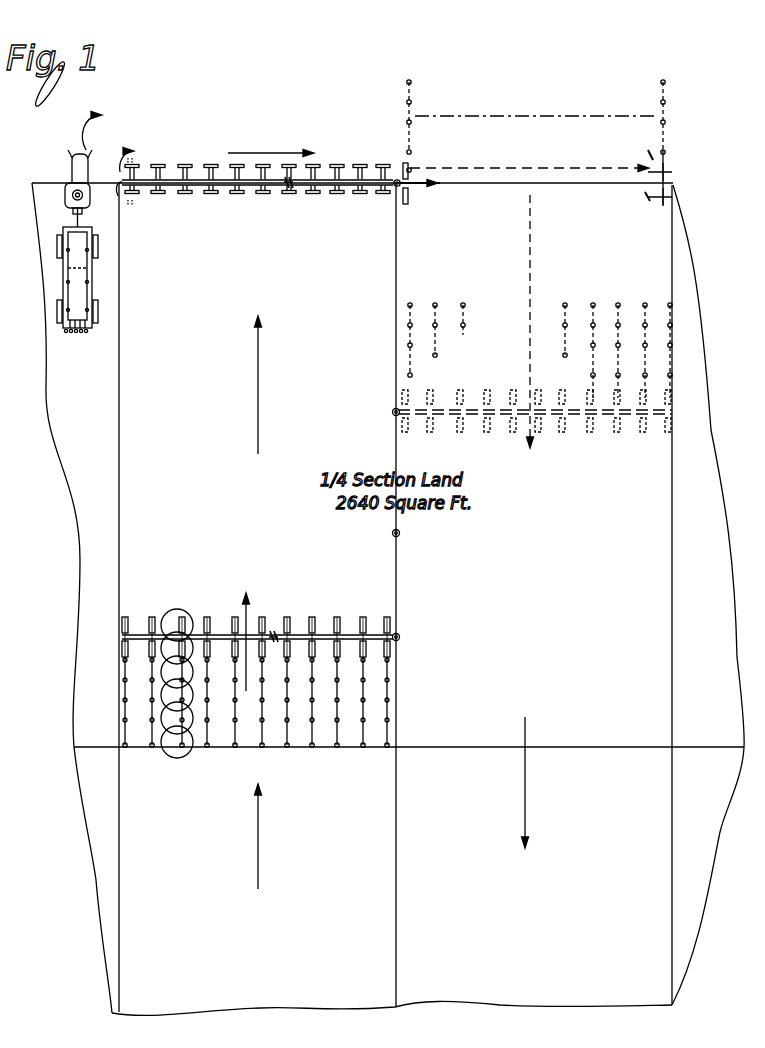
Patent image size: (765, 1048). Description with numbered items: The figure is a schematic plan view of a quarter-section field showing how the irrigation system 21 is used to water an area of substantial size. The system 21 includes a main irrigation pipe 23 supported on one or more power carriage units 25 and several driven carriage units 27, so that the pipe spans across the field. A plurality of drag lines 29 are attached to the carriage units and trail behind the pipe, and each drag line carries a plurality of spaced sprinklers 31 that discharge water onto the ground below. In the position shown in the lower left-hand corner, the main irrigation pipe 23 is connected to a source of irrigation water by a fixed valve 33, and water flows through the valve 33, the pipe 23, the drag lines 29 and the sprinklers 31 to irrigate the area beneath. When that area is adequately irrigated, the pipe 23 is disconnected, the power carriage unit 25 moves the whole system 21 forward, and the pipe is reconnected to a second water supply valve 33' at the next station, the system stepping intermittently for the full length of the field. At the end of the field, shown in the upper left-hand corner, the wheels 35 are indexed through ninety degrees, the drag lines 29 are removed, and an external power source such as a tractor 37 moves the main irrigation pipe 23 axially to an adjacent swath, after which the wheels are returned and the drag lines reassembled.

The irrigation system 21 is at (234, 203).
The main irrigation pipe 23 is at (300, 188).
The power carriage unit 25 is at (208, 617).
The driven carriage units 27 is at (363, 620).
The drag lines 29 is at (345, 745).
The sprinklers 31 is at (195, 745).
The fixed valve 33 is at (419, 647).
The water supply valve 33' is at (425, 548).
The wheels 35 is at (160, 164).
The tractor 37 is at (72, 162).